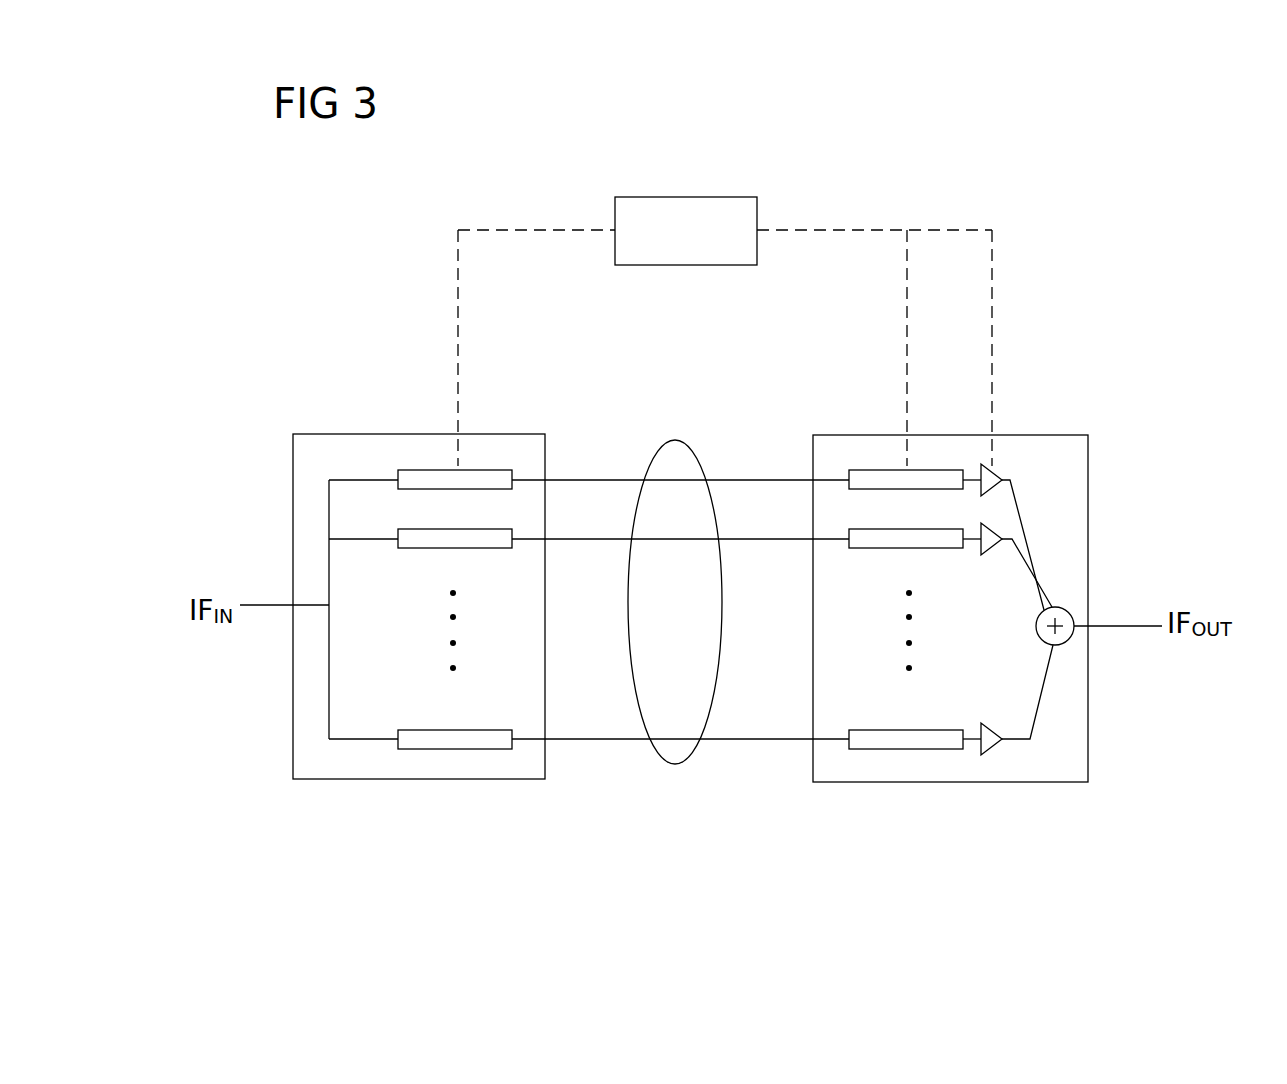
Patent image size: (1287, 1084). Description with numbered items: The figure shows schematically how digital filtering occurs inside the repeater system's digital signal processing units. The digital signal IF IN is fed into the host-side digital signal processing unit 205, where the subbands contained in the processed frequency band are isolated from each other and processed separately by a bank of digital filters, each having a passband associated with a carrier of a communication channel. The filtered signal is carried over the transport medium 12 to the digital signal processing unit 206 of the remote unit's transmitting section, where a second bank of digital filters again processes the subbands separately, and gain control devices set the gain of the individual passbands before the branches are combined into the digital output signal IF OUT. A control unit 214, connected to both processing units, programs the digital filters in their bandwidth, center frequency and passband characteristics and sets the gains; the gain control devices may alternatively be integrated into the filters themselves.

The transport medium 12 is at (675, 764).
The digital signal processing unit 205 is at (415, 782).
The digital signal processing unit 206 is at (872, 783).
The control unit 214 is at (712, 218).